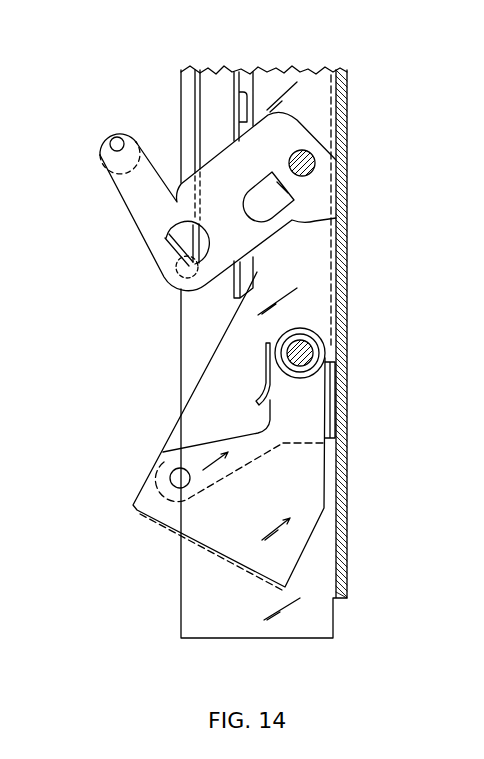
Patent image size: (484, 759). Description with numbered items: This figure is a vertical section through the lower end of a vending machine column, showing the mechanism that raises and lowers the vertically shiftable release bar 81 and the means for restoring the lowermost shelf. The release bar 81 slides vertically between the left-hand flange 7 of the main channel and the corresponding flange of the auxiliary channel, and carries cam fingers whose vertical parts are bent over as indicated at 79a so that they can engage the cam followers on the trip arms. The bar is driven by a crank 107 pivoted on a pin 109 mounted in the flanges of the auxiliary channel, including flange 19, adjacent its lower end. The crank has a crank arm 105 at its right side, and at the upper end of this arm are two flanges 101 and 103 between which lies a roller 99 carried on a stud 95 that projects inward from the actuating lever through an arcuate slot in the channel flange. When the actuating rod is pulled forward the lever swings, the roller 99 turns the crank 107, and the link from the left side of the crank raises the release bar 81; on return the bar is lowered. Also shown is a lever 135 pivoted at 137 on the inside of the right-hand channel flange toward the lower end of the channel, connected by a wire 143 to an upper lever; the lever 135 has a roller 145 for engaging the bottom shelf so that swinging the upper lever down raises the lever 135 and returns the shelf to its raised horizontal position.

The left-hand flange 7 is at (181, 564).
The flange 19 is at (188, 399).
The bent-over portion of cam finger 79a is at (242, 96).
The release bar 81 is at (242, 290).
The stud 95 is at (312, 348).
The roller 99 is at (308, 331).
The flange 101 is at (262, 360).
The flange 103 is at (330, 386).
The crank arm 105 is at (307, 432).
The crank 107 is at (262, 579).
The pin 109 is at (172, 476).
The lever 135 is at (118, 207).
The pivot 137 is at (313, 158).
The wire 143 is at (181, 94).
The roller 145 is at (98, 131).